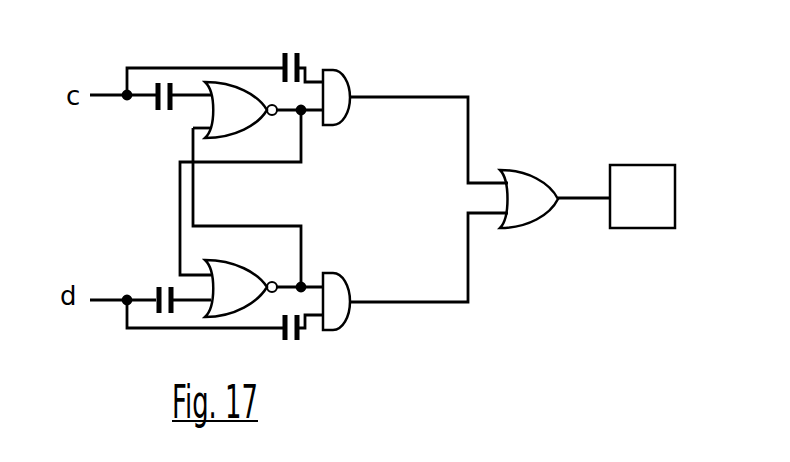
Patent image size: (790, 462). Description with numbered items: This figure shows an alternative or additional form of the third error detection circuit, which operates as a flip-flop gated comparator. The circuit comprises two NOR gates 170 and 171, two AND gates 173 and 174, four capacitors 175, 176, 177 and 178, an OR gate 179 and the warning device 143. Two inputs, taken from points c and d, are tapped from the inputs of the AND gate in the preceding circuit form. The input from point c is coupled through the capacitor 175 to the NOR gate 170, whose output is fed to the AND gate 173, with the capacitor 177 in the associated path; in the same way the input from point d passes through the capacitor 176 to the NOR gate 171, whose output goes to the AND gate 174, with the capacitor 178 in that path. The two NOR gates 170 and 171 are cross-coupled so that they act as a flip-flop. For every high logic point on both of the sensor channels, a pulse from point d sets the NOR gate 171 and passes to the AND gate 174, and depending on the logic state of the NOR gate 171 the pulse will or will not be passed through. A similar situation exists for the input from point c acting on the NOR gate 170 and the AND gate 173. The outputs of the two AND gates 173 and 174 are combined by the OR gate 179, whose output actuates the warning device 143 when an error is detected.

The NOR gate 170 is at (250, 121).
The NOR gate 171 is at (250, 300).
The AND gate 173 is at (340, 73).
The AND gate 174 is at (343, 305).
The capacitor 175 is at (150, 104).
The capacitor 176 is at (159, 289).
The capacitor 177 is at (301, 52).
The capacitor 178 is at (300, 338).
The OR gate 179 is at (543, 211).
The warning device 143 is at (653, 238).